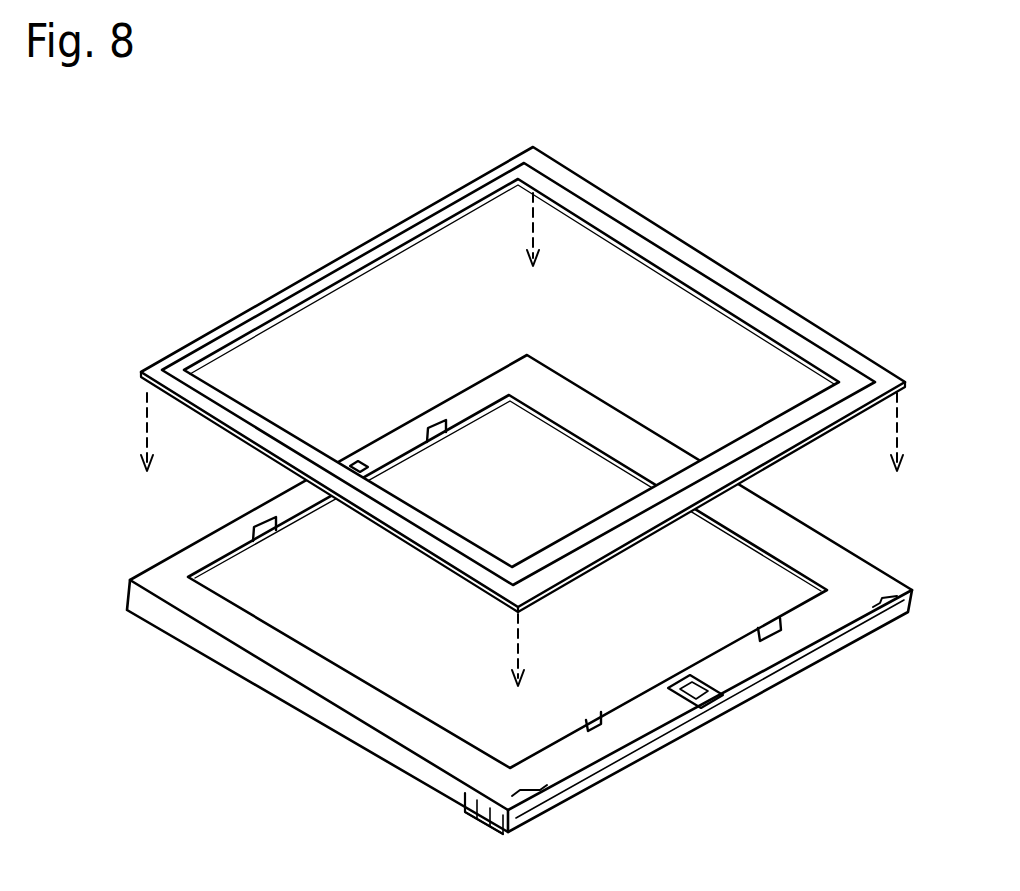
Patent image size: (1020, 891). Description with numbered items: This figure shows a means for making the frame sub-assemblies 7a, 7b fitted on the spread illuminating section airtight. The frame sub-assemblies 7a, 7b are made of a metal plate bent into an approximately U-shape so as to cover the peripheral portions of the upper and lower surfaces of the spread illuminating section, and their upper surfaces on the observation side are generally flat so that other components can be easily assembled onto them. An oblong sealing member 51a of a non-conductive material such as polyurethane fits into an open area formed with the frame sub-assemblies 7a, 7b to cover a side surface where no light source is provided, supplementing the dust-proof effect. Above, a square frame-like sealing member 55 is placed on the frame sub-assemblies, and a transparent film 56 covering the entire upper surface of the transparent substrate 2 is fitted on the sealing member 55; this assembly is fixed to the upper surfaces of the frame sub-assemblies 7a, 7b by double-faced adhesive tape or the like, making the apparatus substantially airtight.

The transparent substrate 2 is at (355, 613).
The frame sub-assembly 7a is at (637, 418).
The frame sub-assembly 7b is at (345, 738).
The sealing member 51a is at (773, 668).
The sealing member 55 is at (708, 268).
The transparent film 56 is at (773, 337).